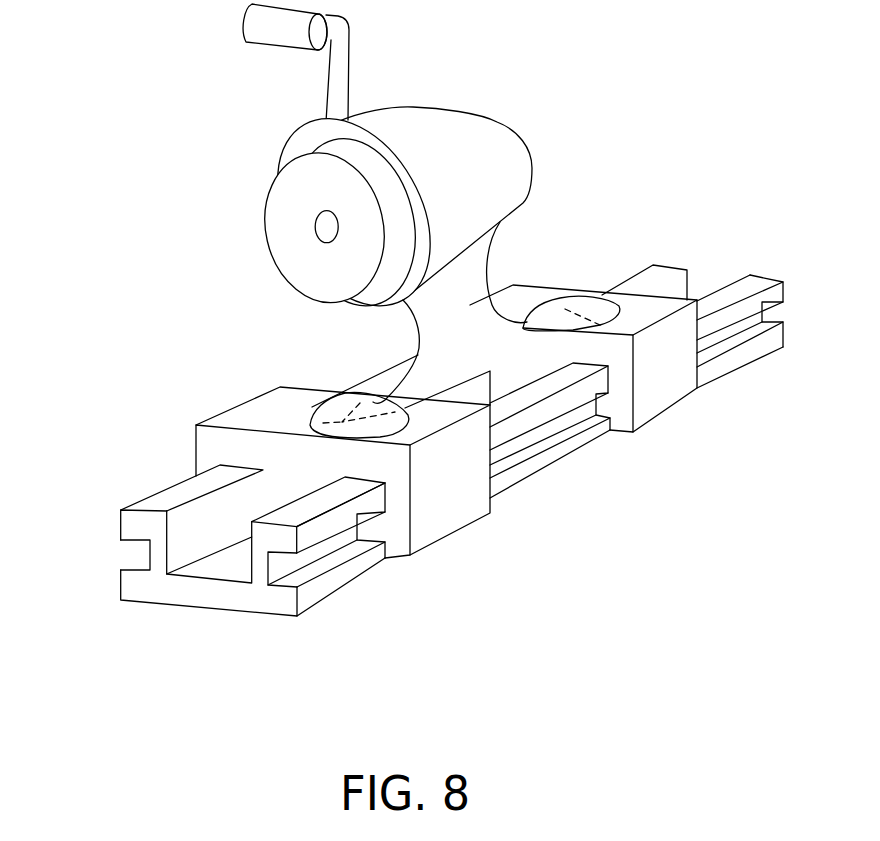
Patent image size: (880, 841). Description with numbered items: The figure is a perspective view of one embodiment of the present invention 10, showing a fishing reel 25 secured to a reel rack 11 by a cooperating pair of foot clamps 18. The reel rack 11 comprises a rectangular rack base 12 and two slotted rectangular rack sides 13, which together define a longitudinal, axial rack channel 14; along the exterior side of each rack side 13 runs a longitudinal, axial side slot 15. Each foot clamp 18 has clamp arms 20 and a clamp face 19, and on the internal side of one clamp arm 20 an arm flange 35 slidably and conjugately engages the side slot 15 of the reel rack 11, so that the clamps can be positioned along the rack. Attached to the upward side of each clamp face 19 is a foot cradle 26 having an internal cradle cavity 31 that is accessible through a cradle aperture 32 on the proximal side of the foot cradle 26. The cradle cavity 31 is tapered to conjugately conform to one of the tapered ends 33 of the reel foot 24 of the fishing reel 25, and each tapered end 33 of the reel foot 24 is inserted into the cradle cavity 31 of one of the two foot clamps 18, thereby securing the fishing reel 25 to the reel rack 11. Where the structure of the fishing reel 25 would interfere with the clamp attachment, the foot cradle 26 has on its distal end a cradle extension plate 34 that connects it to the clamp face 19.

The present invention 10 is at (722, 208).
The reel rack 11 is at (792, 265).
The rack base 12 is at (278, 601).
The rack sides 13 is at (100, 520).
The rack channel 14 is at (227, 557).
The side slot 15 is at (125, 553).
The foot clamp 18 is at (423, 288).
The clamp face 19 is at (245, 424).
The clamp arms 20 is at (462, 496).
The reel foot 24 is at (422, 383).
The fishing reel 25 is at (443, 83).
The foot cradle 26 is at (333, 410).
The cradle cavity 31 is at (365, 385).
The cradle aperture 32 is at (553, 322).
The tapered ends 33 is at (307, 440).
The cradle extension plate 34 is at (602, 295).
The arm flange 35 is at (380, 523).